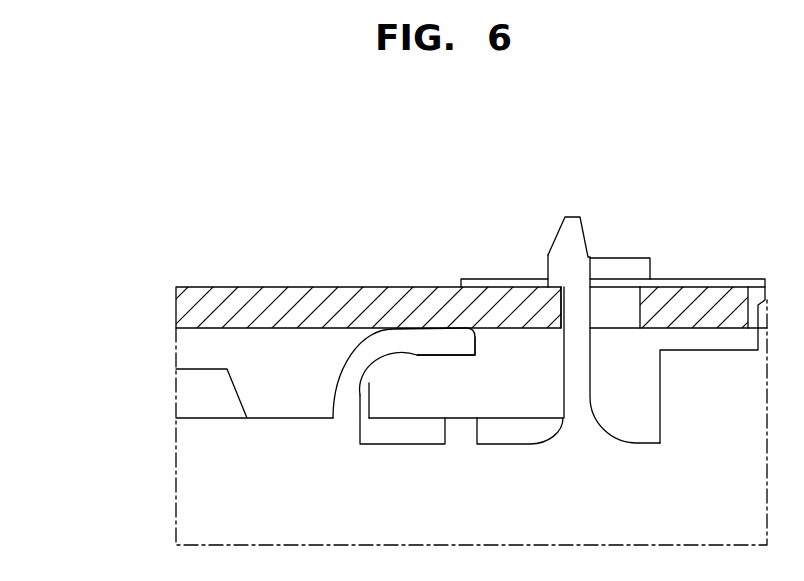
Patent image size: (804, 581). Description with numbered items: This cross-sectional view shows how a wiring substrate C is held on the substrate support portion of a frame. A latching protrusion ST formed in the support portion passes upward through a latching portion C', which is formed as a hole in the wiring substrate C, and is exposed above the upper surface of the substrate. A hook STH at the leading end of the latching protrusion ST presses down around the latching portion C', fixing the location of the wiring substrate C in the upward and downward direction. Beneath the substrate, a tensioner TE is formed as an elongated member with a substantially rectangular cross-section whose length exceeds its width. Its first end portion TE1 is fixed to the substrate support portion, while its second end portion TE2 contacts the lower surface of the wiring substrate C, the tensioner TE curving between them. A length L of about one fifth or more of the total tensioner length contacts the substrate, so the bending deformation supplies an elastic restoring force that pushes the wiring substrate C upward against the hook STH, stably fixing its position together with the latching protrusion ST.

The wiring substrate C is at (345, 303).
The latching portion C' is at (686, 316).
The tensioner TE is at (348, 338).
The first end portion TE1 is at (347, 412).
The second end portion TE2 is at (475, 343).
The length L is at (468, 328).
The latching protrusion ST is at (585, 195).
The hook STH is at (558, 254).